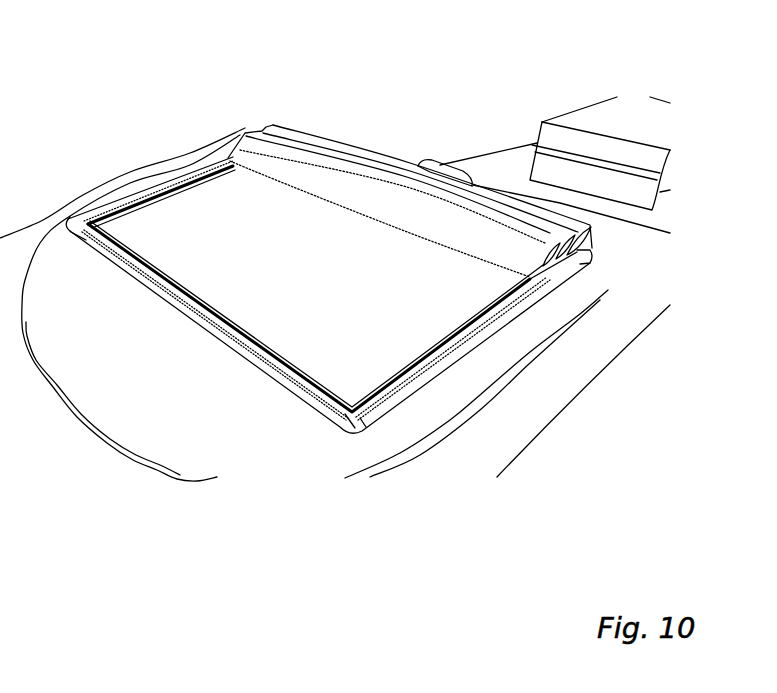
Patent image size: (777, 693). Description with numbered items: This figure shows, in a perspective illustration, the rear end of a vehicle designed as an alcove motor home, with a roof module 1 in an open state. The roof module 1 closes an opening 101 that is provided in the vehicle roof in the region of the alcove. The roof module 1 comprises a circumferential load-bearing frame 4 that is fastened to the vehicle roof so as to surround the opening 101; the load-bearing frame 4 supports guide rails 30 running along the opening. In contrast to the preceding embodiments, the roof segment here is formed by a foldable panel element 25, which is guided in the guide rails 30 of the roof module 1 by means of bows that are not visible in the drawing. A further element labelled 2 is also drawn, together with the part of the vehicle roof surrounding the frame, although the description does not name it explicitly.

The roof module 1 is at (162, 86).
The cover 2 is at (338, 115).
The load-bearing frame 4 is at (89, 162).
The guide rails 30 is at (161, 180).
The foldable panel element 25 is at (397, 222).
The opening 101 is at (440, 326).